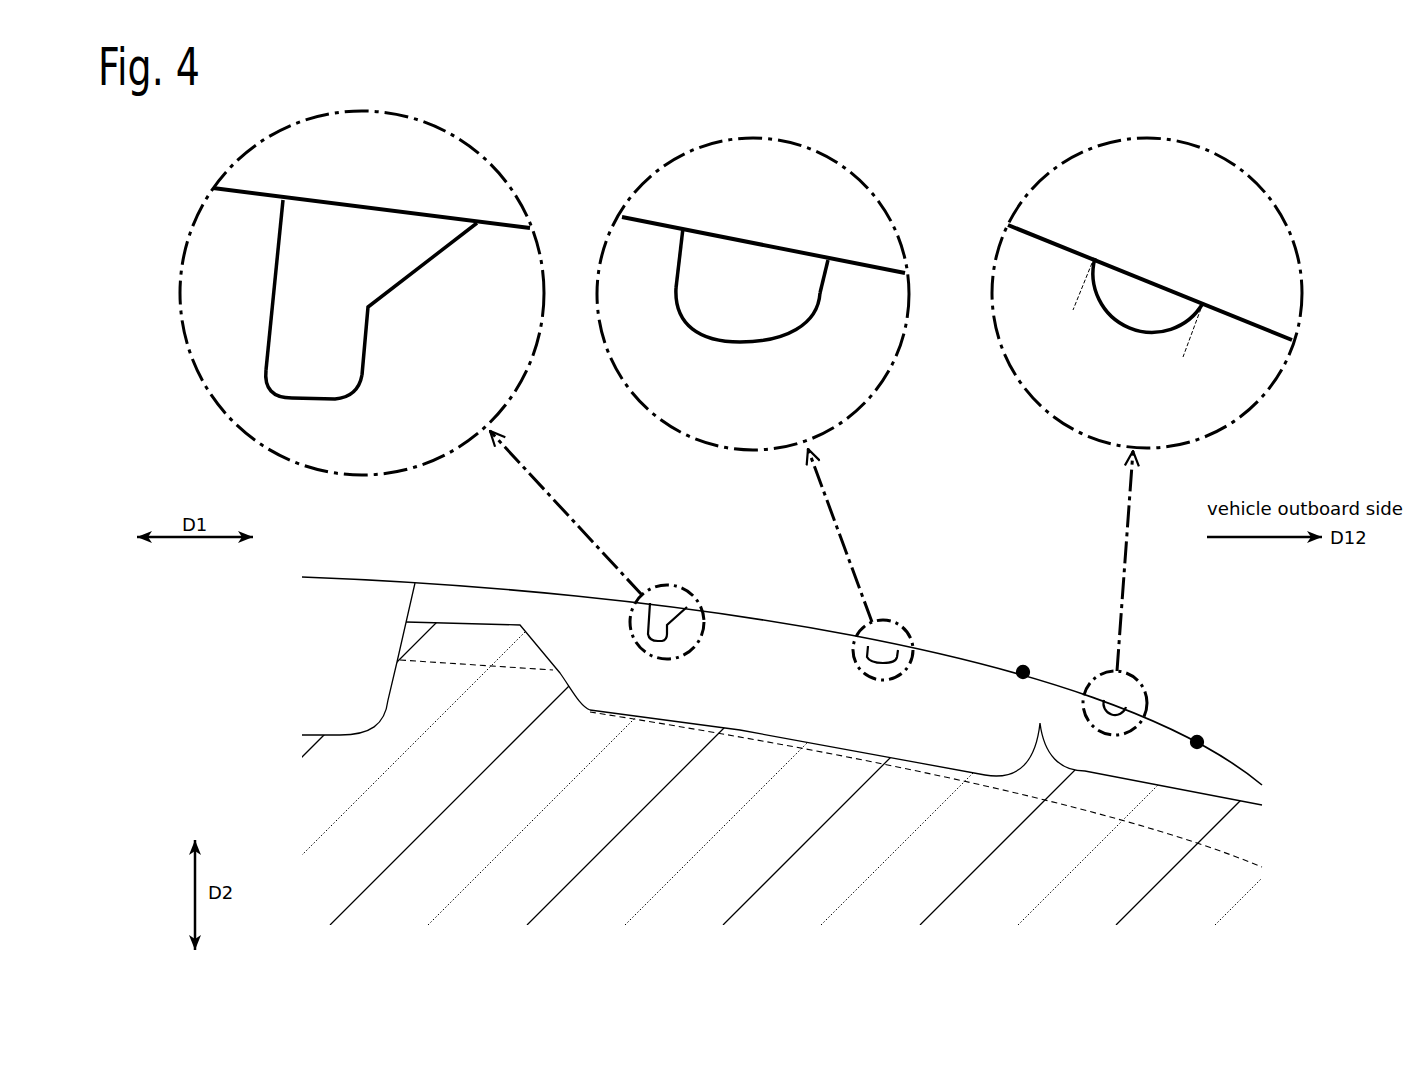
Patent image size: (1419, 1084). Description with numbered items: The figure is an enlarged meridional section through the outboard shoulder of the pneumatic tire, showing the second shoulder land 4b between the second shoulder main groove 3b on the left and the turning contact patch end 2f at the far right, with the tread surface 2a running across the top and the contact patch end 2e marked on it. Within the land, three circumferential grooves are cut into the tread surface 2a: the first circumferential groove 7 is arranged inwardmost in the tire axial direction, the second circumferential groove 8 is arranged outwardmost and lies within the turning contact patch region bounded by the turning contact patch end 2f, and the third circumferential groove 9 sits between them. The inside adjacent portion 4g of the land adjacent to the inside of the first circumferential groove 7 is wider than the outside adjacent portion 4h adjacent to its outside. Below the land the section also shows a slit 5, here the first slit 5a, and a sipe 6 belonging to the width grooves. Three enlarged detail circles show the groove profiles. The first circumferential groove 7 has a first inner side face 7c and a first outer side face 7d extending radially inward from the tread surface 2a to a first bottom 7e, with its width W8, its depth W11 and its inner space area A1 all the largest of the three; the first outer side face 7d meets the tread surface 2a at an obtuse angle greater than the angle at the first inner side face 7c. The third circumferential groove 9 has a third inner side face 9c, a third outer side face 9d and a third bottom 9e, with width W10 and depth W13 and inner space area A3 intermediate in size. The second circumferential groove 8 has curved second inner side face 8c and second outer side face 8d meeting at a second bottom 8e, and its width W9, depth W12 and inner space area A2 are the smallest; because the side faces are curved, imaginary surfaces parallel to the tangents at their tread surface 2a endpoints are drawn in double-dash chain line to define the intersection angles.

The tread surface 2a is at (517, 222).
The contact patch end 2e is at (1023, 665).
The turning contact patch end 2f is at (1199, 736).
The second shoulder main groove 3b is at (335, 600).
The inside adjacent portion 4g is at (521, 588).
The outside adjacent portion 4h is at (728, 610).
The second shoulder land 4b is at (748, 596).
The slit 5 is at (913, 768).
The first slit 5a is at (831, 763).
The sipe 6 is at (772, 657).
The first circumferential groove 7 is at (436, 420).
The first inner side face 7c is at (283, 298).
The first outer side face 7d is at (410, 275).
The first bottom 7e is at (345, 396).
The second circumferential groove 8 is at (1161, 454).
The second inner side face 8c is at (1100, 258).
The second outer side face 8d is at (1205, 297).
The second bottom 8e is at (1125, 316).
The third circumferential groove 9 is at (780, 445).
The third inner side face 9c is at (680, 284).
The third outer side face 9d is at (808, 298).
The third bottom 9e is at (770, 343).
The width dimension of first circumferential groove W8 is at (482, 197).
The width dimension of second circumferential groove W9 is at (1222, 268).
The width dimension of third circumferential groove W10 is at (837, 228).
The depth dimension of first circumferential groove W11 is at (332, 203).
The depth dimension of second circumferential groove W12 is at (1150, 278).
The depth dimension of third circumferential groove W13 is at (757, 245).
The inner space area of first circumferential groove A1 is at (376, 279).
The inner space area of second circumferential groove A2 is at (1135, 294).
The inner space area of third circumferential groove A3 is at (732, 269).